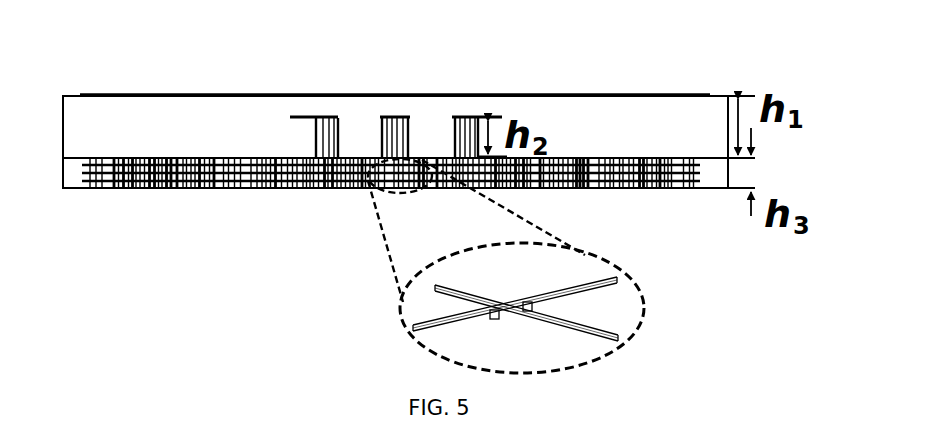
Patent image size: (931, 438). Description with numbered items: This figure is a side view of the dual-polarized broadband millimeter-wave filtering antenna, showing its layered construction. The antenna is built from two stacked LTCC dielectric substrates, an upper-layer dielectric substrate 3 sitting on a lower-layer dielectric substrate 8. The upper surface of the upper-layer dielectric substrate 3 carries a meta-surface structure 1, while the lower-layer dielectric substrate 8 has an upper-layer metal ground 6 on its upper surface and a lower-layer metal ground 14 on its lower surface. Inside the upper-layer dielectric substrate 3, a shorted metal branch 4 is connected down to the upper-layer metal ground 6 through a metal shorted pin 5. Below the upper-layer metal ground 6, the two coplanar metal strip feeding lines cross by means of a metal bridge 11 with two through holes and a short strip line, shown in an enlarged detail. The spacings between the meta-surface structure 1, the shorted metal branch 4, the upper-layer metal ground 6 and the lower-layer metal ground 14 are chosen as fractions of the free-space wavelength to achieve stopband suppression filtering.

The meta-surface structure 1 is at (407, 94).
The upper-layer dielectric substrate 3 is at (580, 121).
The shorted metal branch 4 is at (300, 116).
The metal shorted pin 5 is at (318, 131).
The upper-layer metal ground 6 is at (72, 158).
The lower-layer dielectric substrate 8 is at (70, 179).
The metal bridge 11 is at (506, 266).
The lower-layer metal ground 14 is at (146, 188).